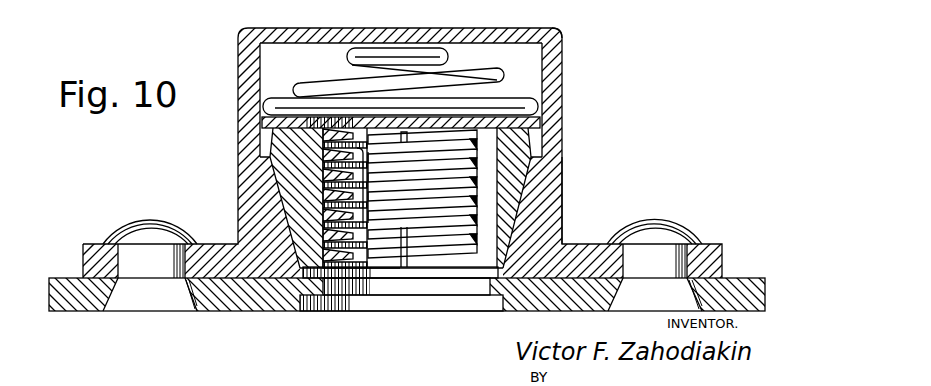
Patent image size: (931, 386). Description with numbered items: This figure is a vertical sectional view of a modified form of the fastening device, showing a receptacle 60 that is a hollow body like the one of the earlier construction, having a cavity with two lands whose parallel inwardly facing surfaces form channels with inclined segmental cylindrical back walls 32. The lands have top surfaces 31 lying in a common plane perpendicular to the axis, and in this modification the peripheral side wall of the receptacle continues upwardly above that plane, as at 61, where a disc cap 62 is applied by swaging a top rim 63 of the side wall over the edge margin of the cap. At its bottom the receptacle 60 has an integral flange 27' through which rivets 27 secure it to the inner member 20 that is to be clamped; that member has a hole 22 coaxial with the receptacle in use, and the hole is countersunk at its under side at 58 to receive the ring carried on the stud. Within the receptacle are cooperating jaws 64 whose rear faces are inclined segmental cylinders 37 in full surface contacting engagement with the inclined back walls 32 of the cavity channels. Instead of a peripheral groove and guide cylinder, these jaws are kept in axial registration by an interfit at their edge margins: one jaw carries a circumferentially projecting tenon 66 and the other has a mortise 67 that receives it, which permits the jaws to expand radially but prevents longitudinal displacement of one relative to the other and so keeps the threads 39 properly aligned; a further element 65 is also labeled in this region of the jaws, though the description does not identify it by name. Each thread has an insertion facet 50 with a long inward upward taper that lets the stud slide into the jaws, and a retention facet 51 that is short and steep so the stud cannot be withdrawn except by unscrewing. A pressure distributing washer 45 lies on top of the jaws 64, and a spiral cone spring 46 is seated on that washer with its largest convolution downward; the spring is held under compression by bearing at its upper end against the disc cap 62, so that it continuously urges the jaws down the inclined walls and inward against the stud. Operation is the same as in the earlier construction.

The inner member 20 is at (63, 313).
The hole 22 is at (453, 290).
The rivets 27 is at (407, 250).
The flange 27' is at (56, 260).
The top surfaces of the lands 31 is at (267, 157).
The inclined segmental cylindrical back walls 32 is at (280, 192).
The inclined segmental cylinders 37 is at (287, 212).
The threads 39 is at (427, 150).
The pressure-distributing washer 45 is at (540, 120).
The spiral cone spring 46 is at (535, 100).
The insertion facet 50 is at (375, 255).
The retention facet 51 is at (392, 245).
The countersink 58 is at (487, 307).
The receptacle 60 is at (562, 165).
The peripheral side wall 61 is at (238, 62).
The disc cap 62 is at (485, 28).
The top rim 63 is at (540, 28).
The jaws 64 is at (432, 268).
The pin 65 is at (377, 146).
The tenon 66 is at (357, 145).
The mortise 67 is at (385, 262).